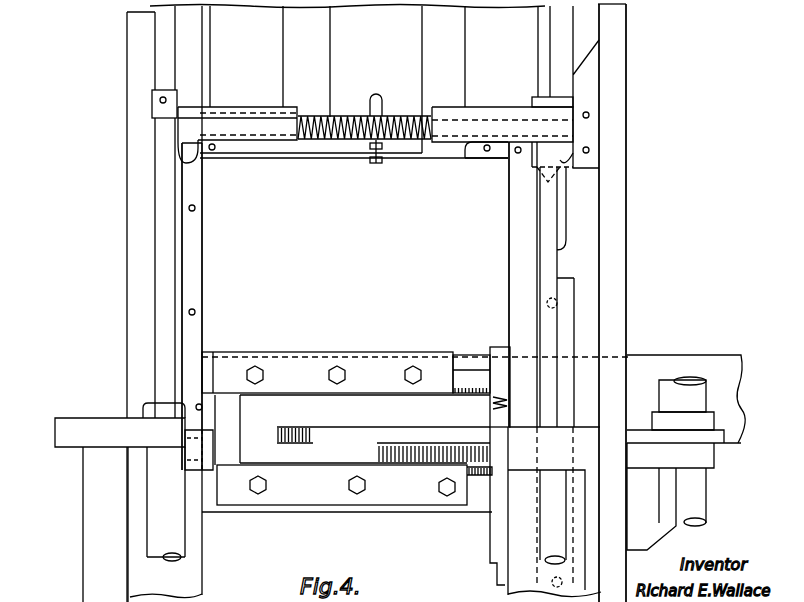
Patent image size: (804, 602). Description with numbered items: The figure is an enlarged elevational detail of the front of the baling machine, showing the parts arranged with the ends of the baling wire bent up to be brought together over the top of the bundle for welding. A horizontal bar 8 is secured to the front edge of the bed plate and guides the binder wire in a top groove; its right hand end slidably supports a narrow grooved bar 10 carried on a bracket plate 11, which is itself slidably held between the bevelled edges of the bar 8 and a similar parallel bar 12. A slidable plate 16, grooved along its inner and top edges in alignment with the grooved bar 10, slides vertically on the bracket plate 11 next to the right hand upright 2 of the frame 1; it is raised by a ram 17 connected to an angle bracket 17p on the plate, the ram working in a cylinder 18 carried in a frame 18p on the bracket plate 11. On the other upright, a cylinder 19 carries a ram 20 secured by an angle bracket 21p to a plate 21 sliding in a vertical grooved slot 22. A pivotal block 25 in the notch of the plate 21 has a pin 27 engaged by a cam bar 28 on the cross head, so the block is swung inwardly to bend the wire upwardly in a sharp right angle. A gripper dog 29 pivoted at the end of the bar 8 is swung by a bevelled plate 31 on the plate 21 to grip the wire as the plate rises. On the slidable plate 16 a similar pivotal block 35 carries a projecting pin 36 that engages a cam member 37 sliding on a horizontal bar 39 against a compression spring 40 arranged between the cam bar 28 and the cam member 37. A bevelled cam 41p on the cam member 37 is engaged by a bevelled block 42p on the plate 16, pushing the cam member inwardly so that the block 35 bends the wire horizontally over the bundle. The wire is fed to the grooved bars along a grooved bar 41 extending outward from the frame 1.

The frame 1 is at (626, 27).
The right hand upright 2 is at (133, 31).
The horizontal bar 8 is at (315, 365).
The narrow grooved bar 10 is at (468, 360).
The bracket plate 11 is at (352, 430).
The parallel bar 12 is at (347, 488).
The slidable plate 16 is at (515, 258).
The ram 17 is at (552, 262).
The angle bracket 17p is at (553, 158).
The cylinder 18 is at (533, 527).
The frame 18p is at (497, 560).
The cylinder 19 is at (180, 535).
The ram 20 is at (163, 250).
The plate 21 is at (137, 140).
The angle bracket 21p is at (155, 113).
The vertical grooved slot 22 is at (157, 63).
The block 25 is at (245, 150).
The pin 27 is at (212, 152).
The cam bar 28 is at (185, 147).
The gripper dog 29 is at (240, 370).
The bevelled plate 31 is at (195, 258).
The pivotal block 35 is at (492, 160).
The projecting pin 36 is at (486, 151).
The cam member 37 is at (528, 156).
The horizontal bar 39 is at (388, 113).
The compression spring 40 is at (350, 141).
The grooved bar 41 is at (718, 360).
The bevelled cam 41p is at (566, 156).
The bevelled block 42p is at (590, 88).